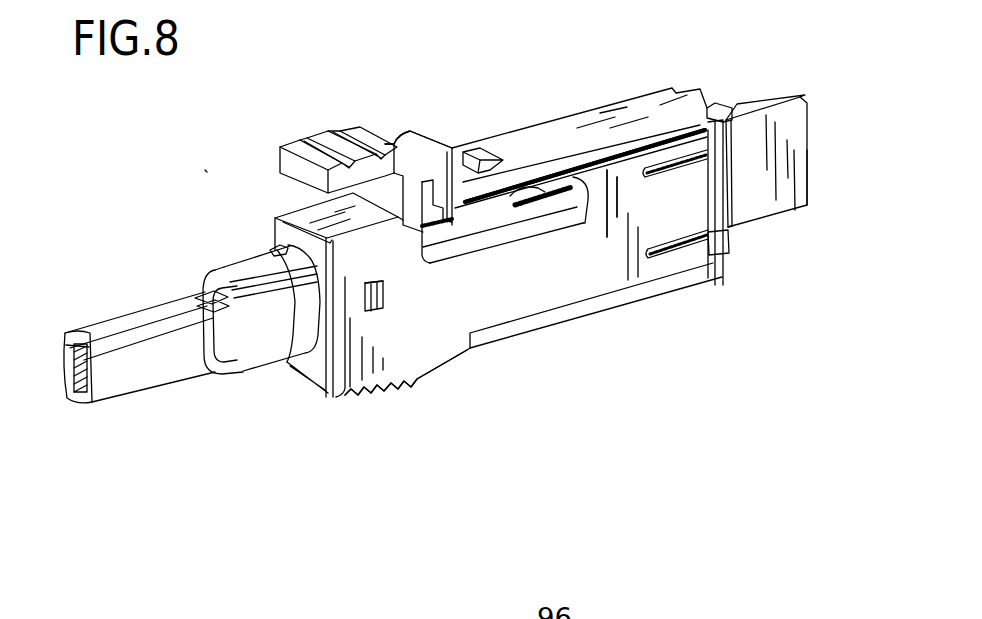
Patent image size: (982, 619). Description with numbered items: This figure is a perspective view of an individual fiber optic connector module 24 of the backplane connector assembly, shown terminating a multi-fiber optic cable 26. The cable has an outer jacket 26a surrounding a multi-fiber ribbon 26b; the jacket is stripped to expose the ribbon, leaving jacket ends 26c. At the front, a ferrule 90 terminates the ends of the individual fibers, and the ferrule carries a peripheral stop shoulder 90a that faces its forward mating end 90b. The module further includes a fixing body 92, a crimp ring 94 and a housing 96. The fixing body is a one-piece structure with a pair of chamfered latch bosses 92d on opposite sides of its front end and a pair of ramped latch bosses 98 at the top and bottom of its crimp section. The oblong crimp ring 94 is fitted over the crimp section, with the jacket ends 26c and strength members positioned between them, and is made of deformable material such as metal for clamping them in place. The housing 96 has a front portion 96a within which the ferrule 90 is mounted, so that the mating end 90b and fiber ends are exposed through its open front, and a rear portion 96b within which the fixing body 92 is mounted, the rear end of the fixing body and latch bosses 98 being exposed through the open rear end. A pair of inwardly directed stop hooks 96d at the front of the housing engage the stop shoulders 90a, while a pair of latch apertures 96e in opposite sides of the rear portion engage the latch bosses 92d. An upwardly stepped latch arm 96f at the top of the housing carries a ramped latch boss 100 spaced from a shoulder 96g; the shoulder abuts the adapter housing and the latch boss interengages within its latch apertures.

The fiber optic connector module 24 is at (193, 140).
The multi-fiber optic cable 26 is at (147, 318).
The outer jacket 26a is at (70, 353).
The multi-fiber ribbon 26b is at (83, 397).
The jacket ends 26c is at (228, 353).
The ferrule 90 is at (768, 126).
The peripheral stop shoulder 90a is at (728, 200).
The forward mating end 90b is at (810, 153).
The fixing body 92 is at (333, 400).
The chamfered latch bosses 92d is at (383, 310).
The crimp ring 94 is at (260, 330).
The housing 96 is at (640, 83).
The front portion 96a is at (688, 212).
The rear portion 96b is at (357, 360).
The stop hooks 96d is at (720, 108).
The latch apertures 96e is at (383, 300).
The upwardly stepped latch arm 96f is at (408, 143).
The shoulder 96g is at (467, 165).
The ramped latch bosses 98 is at (270, 250).
The ramped latch boss 100 is at (498, 165).